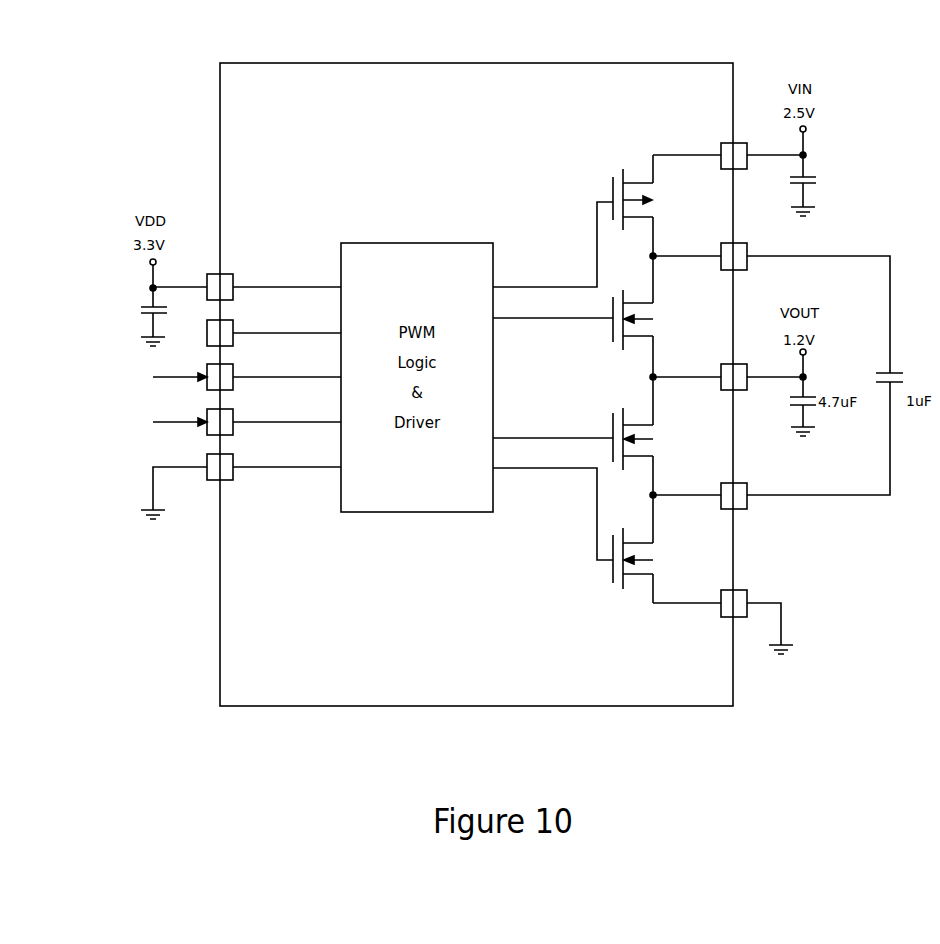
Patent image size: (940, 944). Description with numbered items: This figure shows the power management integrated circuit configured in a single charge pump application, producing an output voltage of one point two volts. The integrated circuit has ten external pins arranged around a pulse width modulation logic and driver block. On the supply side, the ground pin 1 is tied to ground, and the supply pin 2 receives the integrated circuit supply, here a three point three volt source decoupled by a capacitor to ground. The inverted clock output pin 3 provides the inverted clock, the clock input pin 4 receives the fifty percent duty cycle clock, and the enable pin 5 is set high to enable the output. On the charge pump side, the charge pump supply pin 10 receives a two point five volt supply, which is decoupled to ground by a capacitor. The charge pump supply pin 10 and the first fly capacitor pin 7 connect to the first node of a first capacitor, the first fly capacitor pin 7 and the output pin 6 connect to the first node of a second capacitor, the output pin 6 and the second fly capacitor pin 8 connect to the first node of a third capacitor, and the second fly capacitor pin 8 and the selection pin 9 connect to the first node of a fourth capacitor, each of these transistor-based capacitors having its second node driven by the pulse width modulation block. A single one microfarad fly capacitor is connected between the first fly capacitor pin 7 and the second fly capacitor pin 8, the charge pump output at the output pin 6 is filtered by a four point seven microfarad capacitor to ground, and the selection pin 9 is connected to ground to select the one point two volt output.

The ground pin 1 is at (241, 485).
The VDD pin 2 is at (247, 285).
The CLKB pin 3 is at (274, 331).
The CK pin 4 is at (247, 375).
The EN pin 5 is at (247, 420).
The OUT pin 6 is at (728, 375).
The CP1 pin 7 is at (771, 306).
The CP2 pin 8 is at (771, 445).
The NP pin 9 is at (723, 620).
The VIN pin 10 is at (728, 153).